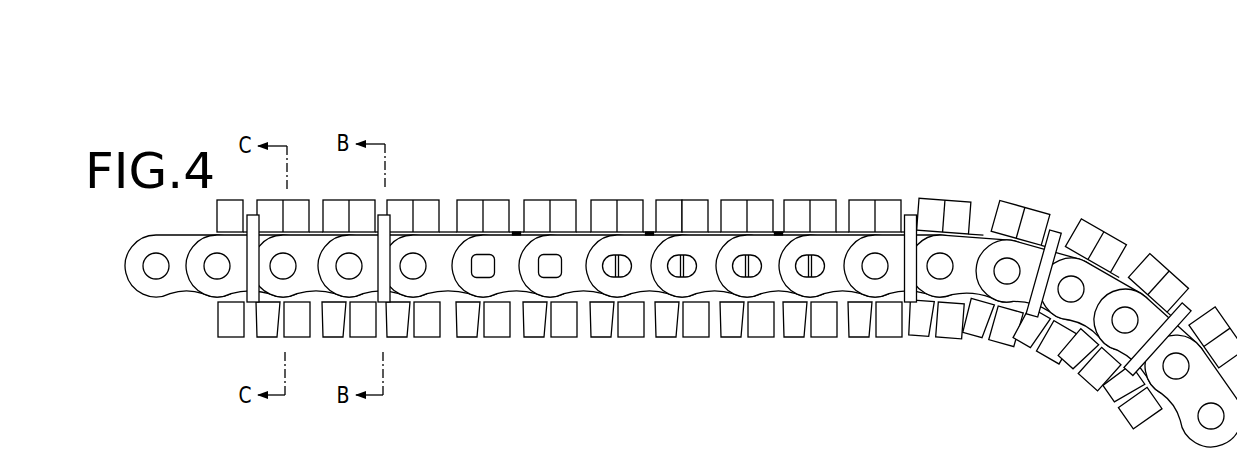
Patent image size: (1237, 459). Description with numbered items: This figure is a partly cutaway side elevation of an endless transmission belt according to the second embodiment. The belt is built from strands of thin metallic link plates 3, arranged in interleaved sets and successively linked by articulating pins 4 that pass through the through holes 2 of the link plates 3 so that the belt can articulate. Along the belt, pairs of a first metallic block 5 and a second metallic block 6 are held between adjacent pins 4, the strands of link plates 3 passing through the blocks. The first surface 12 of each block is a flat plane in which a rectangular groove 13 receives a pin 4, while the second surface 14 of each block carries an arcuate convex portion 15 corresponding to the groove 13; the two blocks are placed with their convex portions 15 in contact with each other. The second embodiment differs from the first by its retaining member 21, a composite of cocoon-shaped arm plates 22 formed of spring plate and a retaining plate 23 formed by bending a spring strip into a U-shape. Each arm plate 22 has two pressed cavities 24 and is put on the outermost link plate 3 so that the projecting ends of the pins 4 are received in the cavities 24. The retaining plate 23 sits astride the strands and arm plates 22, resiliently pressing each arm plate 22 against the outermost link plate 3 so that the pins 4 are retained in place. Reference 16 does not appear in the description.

The through hole 2 is at (607, 263).
The link plate 3 is at (653, 283).
The articulating pin 4 is at (675, 272).
The first metallic block 5 is at (528, 213).
The second metallic block 6 is at (467, 200).
The first surface 12 is at (488, 213).
The rectangular groove 13 is at (478, 257).
The second surface 14 is at (455, 330).
The convex portion 15 is at (453, 237).
The lower tooth 16 is at (482, 326).
The retaining member 21 is at (892, 302).
The arm plate 22 is at (935, 245).
The retaining plate 23 is at (778, 235).
The cavity 24 is at (1007, 277).